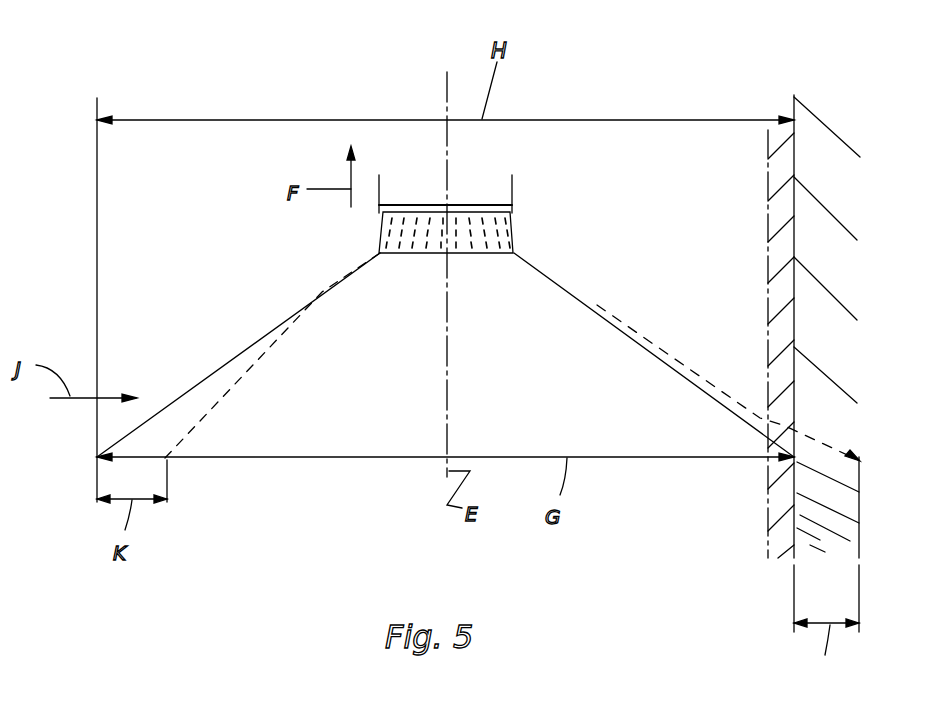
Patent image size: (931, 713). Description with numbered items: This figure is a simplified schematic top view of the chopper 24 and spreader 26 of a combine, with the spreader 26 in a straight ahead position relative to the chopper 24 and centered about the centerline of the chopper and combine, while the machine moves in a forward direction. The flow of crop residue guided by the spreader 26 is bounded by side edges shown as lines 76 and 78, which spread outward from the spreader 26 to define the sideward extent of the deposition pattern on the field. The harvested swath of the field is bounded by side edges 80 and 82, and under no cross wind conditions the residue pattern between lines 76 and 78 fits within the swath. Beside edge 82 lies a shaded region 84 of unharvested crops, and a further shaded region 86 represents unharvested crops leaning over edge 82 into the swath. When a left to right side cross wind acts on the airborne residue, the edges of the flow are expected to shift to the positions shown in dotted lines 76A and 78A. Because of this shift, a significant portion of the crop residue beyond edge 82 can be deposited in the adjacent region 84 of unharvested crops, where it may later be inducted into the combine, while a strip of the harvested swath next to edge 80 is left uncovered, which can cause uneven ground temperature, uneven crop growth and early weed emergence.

The chopper 24 is at (521, 178).
The spreader 26 is at (534, 215).
The side edge of crop residue flow 76 is at (250, 340).
The shifted side edge of crop residue flow 76A is at (229, 372).
The side edge of crop residue flow 78 is at (634, 337).
The shifted side edge of crop residue flow 78A is at (764, 411).
The side edge of harvested swath 80 is at (97, 190).
The side edge of harvested swath 82 is at (794, 162).
The region of unharvested crops 84 is at (865, 80).
The region of unharvested crops leaning over edge 86 is at (786, 108).